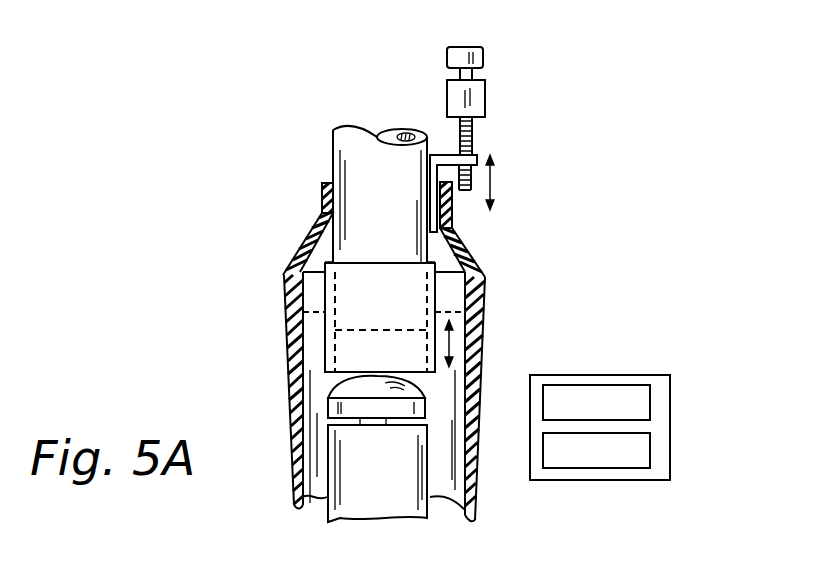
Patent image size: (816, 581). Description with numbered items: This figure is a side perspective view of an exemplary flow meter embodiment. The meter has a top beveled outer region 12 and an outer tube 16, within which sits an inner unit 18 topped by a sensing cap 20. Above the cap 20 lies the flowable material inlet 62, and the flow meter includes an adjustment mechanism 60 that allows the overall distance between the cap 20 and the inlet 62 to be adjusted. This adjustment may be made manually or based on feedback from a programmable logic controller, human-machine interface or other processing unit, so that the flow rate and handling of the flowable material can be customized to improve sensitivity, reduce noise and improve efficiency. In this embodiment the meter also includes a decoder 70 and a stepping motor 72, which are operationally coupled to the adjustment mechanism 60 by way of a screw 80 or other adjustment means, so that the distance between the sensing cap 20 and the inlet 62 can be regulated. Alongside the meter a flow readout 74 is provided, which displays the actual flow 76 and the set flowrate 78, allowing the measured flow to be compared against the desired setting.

The top beveled outer region 12 is at (484, 262).
The outer tube 16 is at (480, 498).
The inner unit 18 is at (362, 478).
The sensing cap 20 is at (327, 393).
The adjustment mechanism 60 is at (443, 152).
The flowable material inlet 62 is at (324, 337).
The decoder 70 is at (487, 43).
The stepping motor 72 is at (488, 90).
The flow readout 74 is at (613, 398).
The actual flow 76 is at (608, 387).
The set flowrate 78 is at (603, 470).
The screw 80 is at (476, 138).